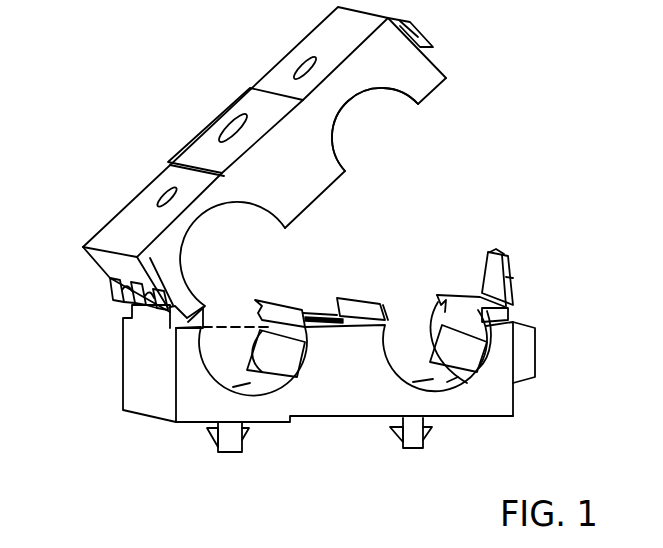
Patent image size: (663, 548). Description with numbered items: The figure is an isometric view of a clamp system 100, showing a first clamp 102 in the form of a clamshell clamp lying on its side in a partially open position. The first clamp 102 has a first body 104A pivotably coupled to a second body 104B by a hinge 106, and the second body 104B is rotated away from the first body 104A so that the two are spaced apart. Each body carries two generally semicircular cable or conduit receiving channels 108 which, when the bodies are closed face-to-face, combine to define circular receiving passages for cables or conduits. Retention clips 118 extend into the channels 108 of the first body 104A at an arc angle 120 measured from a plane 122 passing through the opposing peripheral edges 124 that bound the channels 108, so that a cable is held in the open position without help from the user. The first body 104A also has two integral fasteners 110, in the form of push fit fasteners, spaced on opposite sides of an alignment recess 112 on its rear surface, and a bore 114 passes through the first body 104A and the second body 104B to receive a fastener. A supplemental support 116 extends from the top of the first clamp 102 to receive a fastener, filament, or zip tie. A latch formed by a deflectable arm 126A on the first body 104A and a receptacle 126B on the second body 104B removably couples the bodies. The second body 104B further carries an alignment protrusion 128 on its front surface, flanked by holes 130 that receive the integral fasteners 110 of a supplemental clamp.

The clamp system 100 is at (122, 89).
The first clamp 102 is at (121, 366).
The first body 104A is at (505, 400).
The second body 104B is at (407, 72).
The hinge 106 is at (110, 293).
The cable or conduit receiving channel 108 is at (364, 108).
The integral fastener 110 is at (209, 438).
The alignment recess 112 is at (338, 419).
The bore 114 is at (230, 122).
The supplemental support 116 is at (530, 350).
The retention clip 118 is at (458, 294).
The arc angle 120 is at (258, 313).
The plane 122 is at (230, 327).
The peripheral edge 124 is at (388, 318).
The deflectable arm 126A is at (498, 251).
The receptacle 126B is at (418, 35).
The alignment protrusion 128 is at (203, 138).
The hole 130 is at (302, 62).